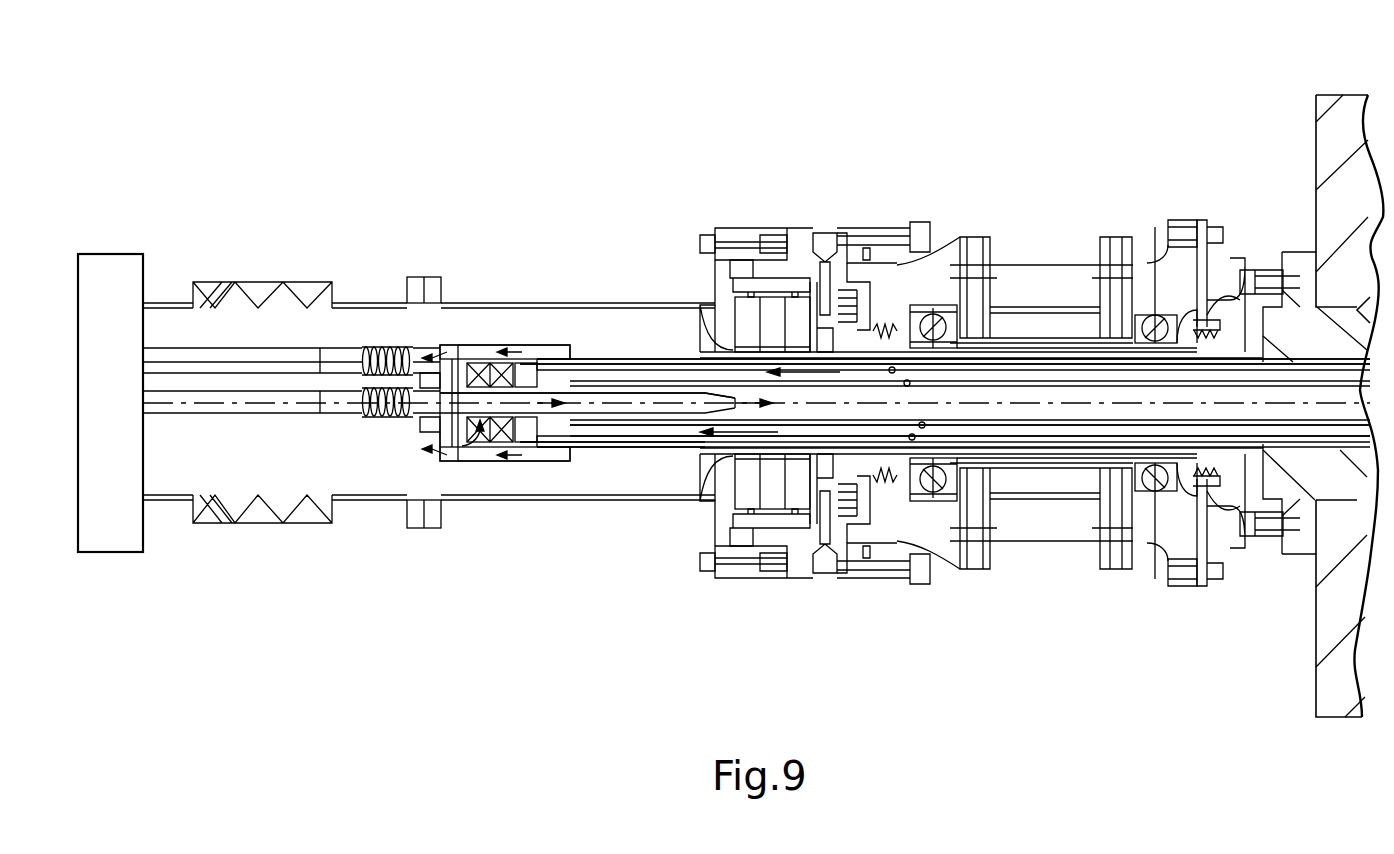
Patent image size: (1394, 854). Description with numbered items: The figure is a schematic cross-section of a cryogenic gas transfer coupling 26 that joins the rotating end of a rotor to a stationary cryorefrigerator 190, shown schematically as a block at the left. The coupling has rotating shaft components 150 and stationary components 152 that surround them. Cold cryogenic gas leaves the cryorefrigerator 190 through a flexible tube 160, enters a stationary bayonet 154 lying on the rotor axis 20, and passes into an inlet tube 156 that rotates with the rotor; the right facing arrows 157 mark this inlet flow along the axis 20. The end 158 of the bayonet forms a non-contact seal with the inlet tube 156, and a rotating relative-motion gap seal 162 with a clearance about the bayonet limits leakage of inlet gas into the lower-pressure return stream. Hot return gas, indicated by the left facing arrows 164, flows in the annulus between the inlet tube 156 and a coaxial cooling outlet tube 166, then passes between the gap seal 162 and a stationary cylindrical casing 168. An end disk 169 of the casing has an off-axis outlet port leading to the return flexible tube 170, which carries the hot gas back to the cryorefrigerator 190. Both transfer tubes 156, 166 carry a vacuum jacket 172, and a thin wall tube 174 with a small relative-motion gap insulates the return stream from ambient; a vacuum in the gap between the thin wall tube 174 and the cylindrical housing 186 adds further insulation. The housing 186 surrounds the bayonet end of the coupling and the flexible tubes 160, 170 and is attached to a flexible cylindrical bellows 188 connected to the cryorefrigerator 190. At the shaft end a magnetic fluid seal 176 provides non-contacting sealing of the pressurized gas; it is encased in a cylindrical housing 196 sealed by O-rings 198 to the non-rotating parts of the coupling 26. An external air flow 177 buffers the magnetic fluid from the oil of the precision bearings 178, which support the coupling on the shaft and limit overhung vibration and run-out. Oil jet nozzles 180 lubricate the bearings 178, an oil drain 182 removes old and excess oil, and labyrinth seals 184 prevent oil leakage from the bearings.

The axis 20 is at (155, 405).
The transfer coupling 26 is at (1092, 56).
The rotating shaft components 150 is at (1030, 365).
The stationary components 152 is at (547, 463).
The stationary bayonet 154 is at (680, 397).
The inlet tube 156 is at (1185, 410).
The right facing arrows 157 is at (490, 400).
The end of the bayonet 158 is at (712, 360).
The flexible tube 160 is at (378, 418).
The gap seal 162 is at (475, 447).
The left facing arrows 164 is at (522, 347).
The cooling outlet tube 166 is at (613, 430).
The stationary cylindrical casing 168 is at (497, 470).
The end disk 169 is at (440, 447).
The return flexible tube 170 is at (338, 350).
The vacuum jacket 172 is at (907, 380).
The thin wall tube 174 is at (622, 365).
The magnetic fluid seal 176 is at (772, 307).
The air flow 177 is at (822, 258).
The bearings 178 is at (933, 325).
The oil jet nozzles 180 is at (990, 232).
The oil drain 182 is at (888, 560).
The labyrinth seals 184 is at (852, 285).
The cylindrical housing 186 is at (358, 300).
The flexible cylindrical bellows 188 is at (205, 283).
The cryorefrigerator 190 is at (98, 262).
The cylindrical housing 196 is at (762, 305).
The O-rings 198 is at (713, 330).